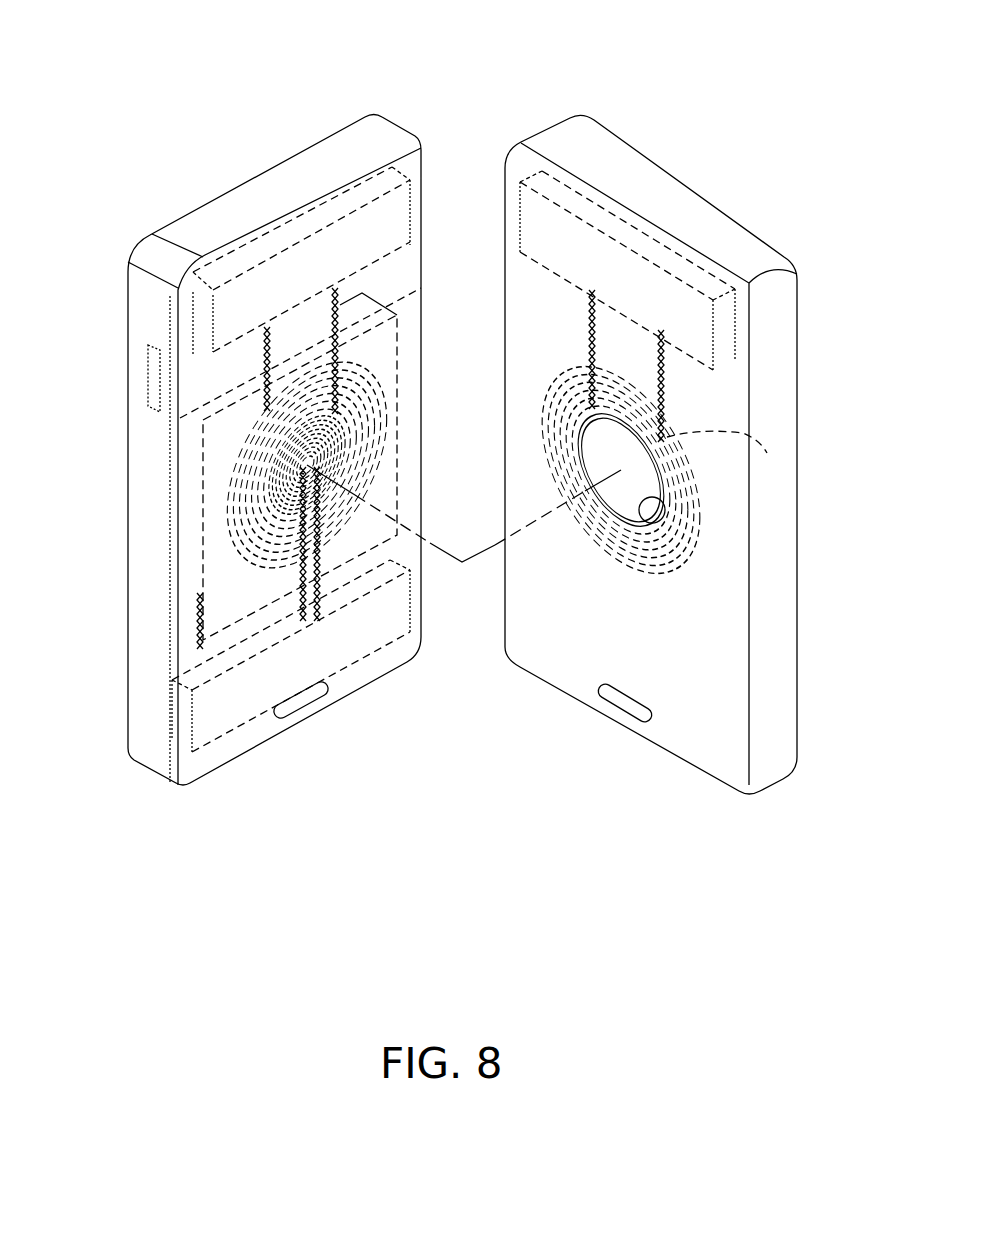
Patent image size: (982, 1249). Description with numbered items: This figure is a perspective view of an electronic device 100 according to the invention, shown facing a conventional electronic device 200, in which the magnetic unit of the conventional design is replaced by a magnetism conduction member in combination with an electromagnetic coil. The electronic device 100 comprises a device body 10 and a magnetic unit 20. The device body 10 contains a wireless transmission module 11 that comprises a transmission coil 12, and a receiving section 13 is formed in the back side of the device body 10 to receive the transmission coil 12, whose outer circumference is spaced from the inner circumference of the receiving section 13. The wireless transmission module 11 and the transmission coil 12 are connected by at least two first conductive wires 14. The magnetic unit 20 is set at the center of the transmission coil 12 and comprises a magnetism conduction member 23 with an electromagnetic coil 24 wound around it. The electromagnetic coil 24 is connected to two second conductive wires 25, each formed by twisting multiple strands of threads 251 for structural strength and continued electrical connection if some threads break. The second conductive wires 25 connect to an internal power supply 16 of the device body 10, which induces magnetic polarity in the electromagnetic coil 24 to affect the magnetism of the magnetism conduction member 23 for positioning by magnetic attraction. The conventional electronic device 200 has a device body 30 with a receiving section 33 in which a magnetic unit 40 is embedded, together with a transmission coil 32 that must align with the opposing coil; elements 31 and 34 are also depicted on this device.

The electronic device 100 is at (374, 98).
The electronic device 200 is at (575, 98).
The device body 10 is at (176, 224).
The wireless transmission module 11 is at (272, 240).
The transmission coil 12 is at (405, 436).
The receiving section 13 is at (422, 389).
The first conductive wires 14 is at (420, 300).
The internal power supply 16 is at (224, 746).
The magnetic unit 20 is at (55, 483).
The magnetism conduction member 23 is at (270, 463).
The electromagnetic coil 24 is at (222, 497).
The second conductive wires 25 is at (55, 620).
The threads 251 is at (215, 597).
The device body 30 is at (722, 230).
The battery of second device 31 is at (582, 205).
The transmission coils 32 is at (767, 453).
The receiving section 33 is at (665, 500).
The magnetic elements of second device 34 is at (590, 320).
The magnetic unit 40 is at (640, 478).